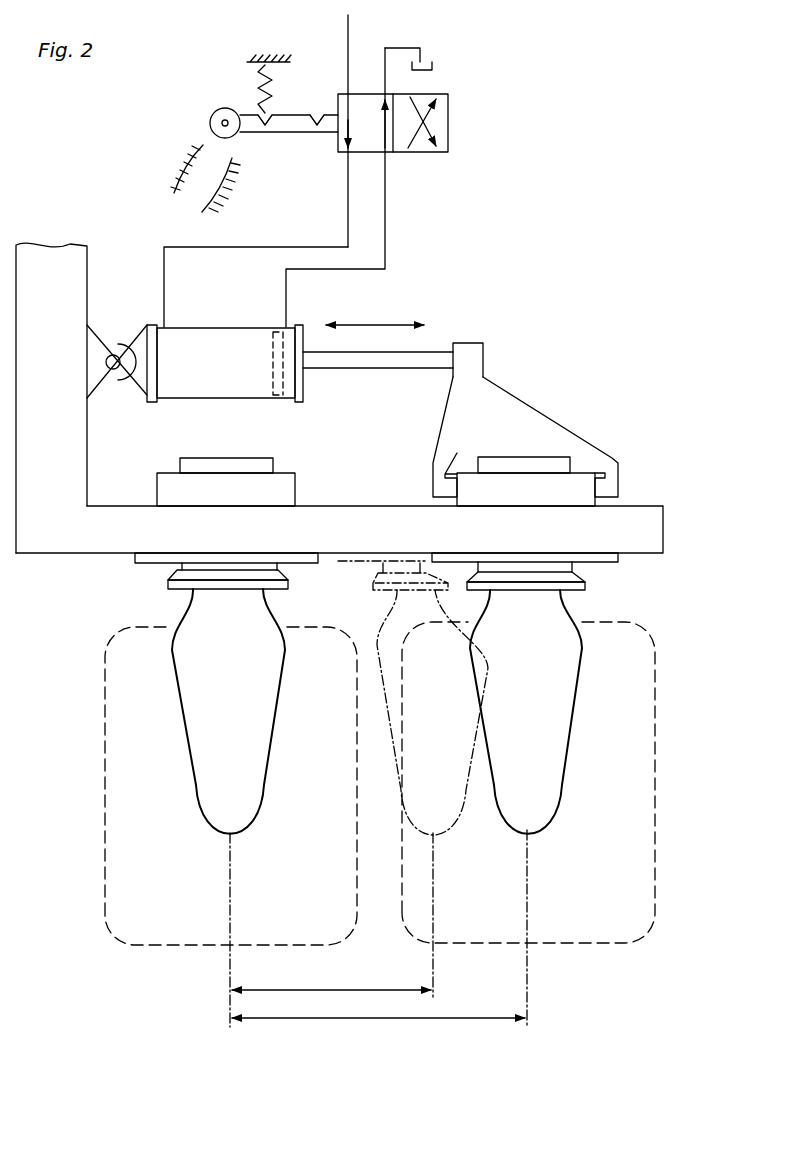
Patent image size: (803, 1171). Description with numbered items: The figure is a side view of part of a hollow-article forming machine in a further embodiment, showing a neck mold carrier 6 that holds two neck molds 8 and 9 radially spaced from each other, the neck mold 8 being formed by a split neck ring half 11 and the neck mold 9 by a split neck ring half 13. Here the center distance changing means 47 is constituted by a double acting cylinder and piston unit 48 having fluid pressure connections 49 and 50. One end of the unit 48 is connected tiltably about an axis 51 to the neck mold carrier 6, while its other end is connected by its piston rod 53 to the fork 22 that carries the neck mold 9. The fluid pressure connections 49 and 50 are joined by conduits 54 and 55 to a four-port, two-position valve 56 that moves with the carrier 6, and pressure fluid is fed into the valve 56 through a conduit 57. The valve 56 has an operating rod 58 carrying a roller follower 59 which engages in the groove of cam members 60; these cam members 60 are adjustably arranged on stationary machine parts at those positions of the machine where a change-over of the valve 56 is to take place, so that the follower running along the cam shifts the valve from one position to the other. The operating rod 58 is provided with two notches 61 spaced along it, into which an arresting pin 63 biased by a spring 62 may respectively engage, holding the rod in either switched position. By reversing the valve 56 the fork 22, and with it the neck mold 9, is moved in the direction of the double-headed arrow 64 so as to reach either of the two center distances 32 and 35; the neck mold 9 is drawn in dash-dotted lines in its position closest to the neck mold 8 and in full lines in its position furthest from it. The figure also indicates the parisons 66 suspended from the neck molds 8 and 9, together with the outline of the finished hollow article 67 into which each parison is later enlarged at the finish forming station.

The neck mold carrier 6 is at (666, 537).
The neck mold 8 is at (291, 472).
The neck mold 9 is at (578, 488).
The half of split neck ring 11 is at (172, 493).
The half of split neck ring 13 is at (581, 493).
The fork 22 is at (540, 406).
The center distance 32 is at (341, 990).
The center distance 35 is at (407, 1018).
The center distance changing means 47 is at (449, 320).
The double acting cylinder and piston unit 48 is at (236, 326).
The fluid pressure connection 49 is at (165, 324).
The fluid pressure connection 50 is at (287, 315).
The axis 51 is at (115, 356).
The piston rod 53 is at (373, 369).
The conduit 54 is at (165, 258).
The conduit 55 is at (288, 297).
The four-port, two-position valve 56 is at (451, 156).
The conduit 57 is at (350, 46).
The operating rod 58 is at (284, 134).
The roller follower 59 is at (221, 108).
The cam members 60 is at (190, 203).
The notches 61 is at (316, 113).
The spring 62 is at (257, 82).
The arresting pin 63 is at (271, 111).
The double-headed arrow 64 is at (368, 325).
The parisons 66 is at (178, 725).
The finished hollow article 67 is at (125, 945).